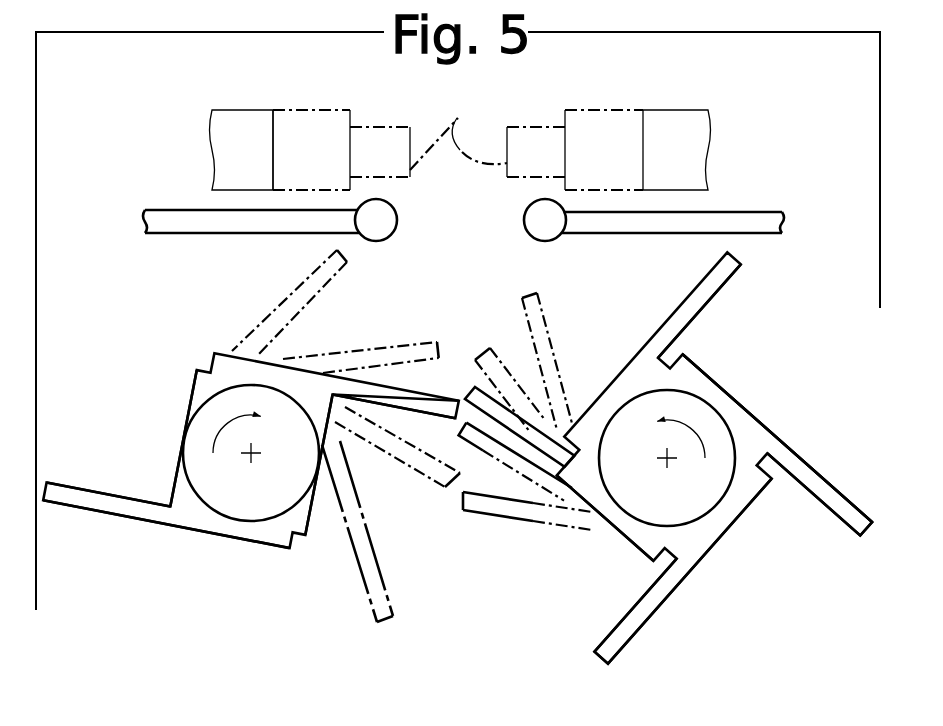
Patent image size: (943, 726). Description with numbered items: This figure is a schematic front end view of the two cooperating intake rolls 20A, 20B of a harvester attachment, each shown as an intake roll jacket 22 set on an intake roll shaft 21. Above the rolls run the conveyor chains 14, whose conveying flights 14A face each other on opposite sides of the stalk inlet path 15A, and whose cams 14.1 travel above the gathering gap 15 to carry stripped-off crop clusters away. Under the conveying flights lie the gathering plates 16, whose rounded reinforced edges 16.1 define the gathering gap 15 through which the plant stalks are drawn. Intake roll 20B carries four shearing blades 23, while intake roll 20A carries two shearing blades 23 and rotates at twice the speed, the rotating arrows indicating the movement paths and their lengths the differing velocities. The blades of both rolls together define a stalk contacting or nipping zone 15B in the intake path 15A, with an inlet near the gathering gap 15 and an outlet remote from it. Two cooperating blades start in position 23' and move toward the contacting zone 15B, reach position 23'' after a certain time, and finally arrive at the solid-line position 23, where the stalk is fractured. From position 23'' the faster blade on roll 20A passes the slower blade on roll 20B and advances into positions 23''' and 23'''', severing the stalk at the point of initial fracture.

The chain element 14 is at (298, 108).
The conveying flight 14A is at (335, 164).
The cam 14.1 is at (458, 130).
The gathering gap 15 is at (481, 239).
The stalk inlet path 15A is at (494, 128).
The stalk contacting zone 15B is at (487, 313).
The gathering plate 16 is at (176, 233).
The rounded reinforced edge 16.1 is at (387, 239).
The intake roll 20A is at (186, 531).
The intake roll 20B is at (722, 542).
The intake roll shaft 21 is at (297, 494).
The intake roll jacket 22 is at (195, 387).
The shearing blade 23 is at (457, 463).
The shearing blade initial position 23' is at (429, 340).
The shearing blade intermediate position 23'' is at (446, 359).
The shearing blade advanced position 23''' is at (453, 487).
The shearing blade final position 23'''' is at (451, 560).